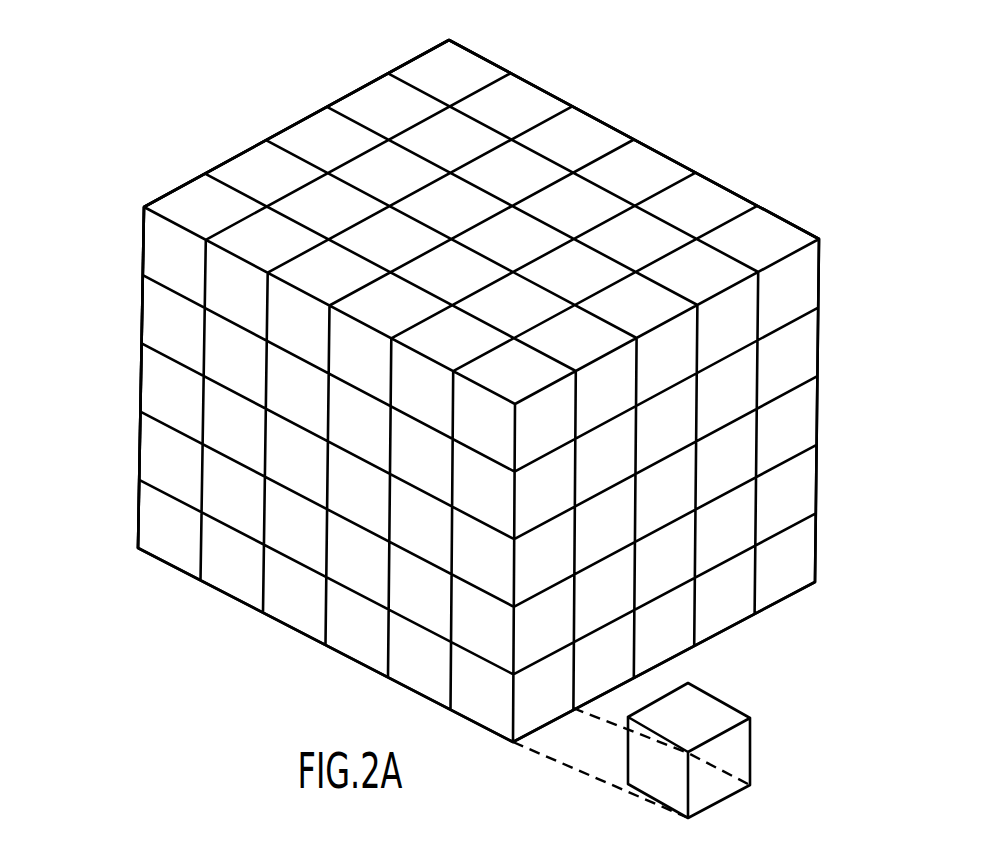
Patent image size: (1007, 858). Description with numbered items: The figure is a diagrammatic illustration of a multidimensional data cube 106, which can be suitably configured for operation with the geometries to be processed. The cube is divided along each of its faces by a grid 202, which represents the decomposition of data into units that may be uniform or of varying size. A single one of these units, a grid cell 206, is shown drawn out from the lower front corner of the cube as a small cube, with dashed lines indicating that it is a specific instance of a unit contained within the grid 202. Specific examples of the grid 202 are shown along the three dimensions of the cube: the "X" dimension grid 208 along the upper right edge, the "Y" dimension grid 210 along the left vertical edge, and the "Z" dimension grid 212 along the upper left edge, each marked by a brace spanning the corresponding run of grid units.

The multidimensional data cube 106 is at (430, 379).
The grid 202 is at (830, 233).
The grid cell 206 is at (767, 755).
The "X" dimension grid 208 is at (755, 163).
The "Y" dimension grid 210 is at (105, 437).
The "Z" dimension grid 212 is at (178, 147).